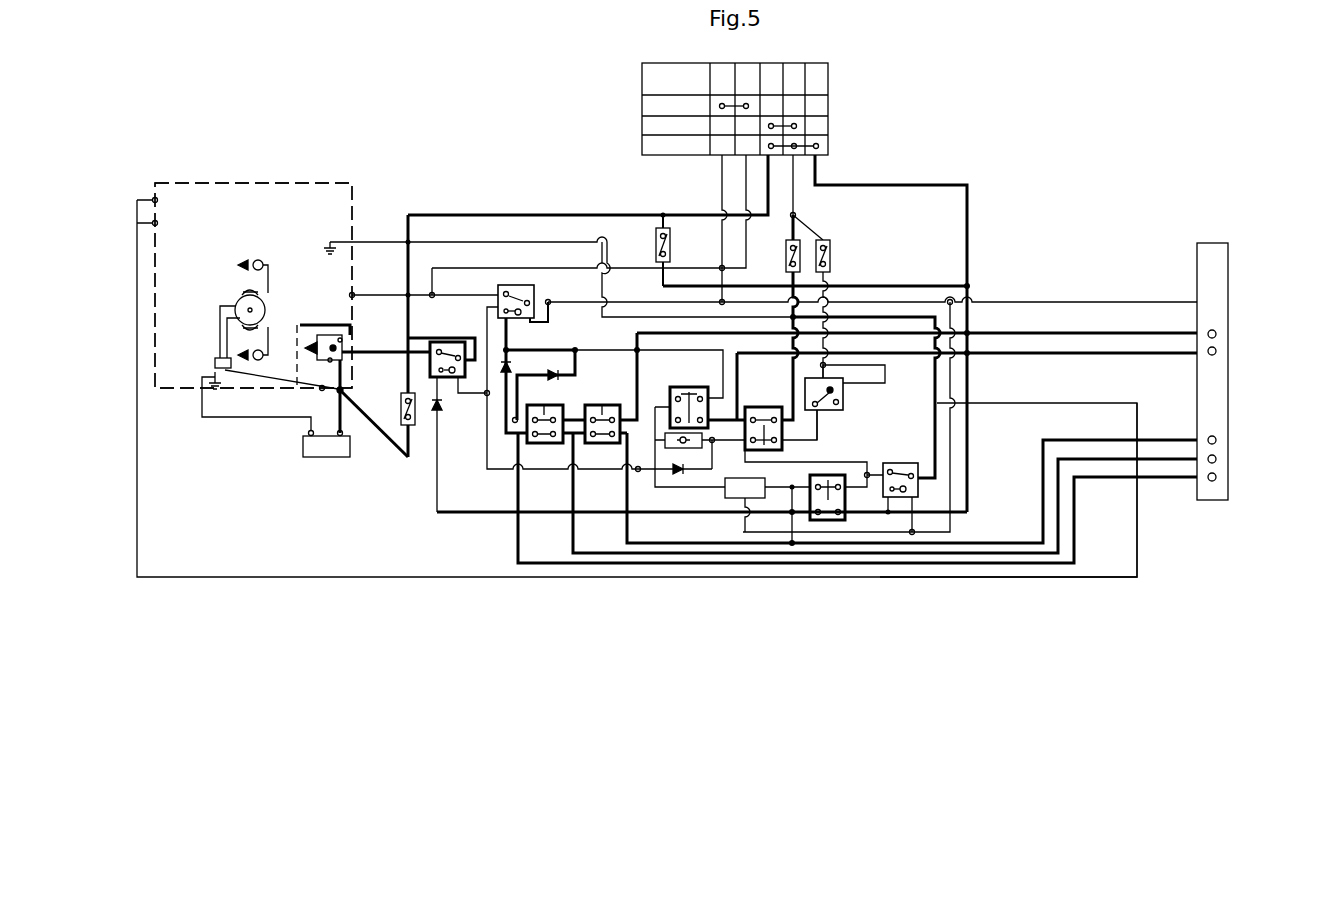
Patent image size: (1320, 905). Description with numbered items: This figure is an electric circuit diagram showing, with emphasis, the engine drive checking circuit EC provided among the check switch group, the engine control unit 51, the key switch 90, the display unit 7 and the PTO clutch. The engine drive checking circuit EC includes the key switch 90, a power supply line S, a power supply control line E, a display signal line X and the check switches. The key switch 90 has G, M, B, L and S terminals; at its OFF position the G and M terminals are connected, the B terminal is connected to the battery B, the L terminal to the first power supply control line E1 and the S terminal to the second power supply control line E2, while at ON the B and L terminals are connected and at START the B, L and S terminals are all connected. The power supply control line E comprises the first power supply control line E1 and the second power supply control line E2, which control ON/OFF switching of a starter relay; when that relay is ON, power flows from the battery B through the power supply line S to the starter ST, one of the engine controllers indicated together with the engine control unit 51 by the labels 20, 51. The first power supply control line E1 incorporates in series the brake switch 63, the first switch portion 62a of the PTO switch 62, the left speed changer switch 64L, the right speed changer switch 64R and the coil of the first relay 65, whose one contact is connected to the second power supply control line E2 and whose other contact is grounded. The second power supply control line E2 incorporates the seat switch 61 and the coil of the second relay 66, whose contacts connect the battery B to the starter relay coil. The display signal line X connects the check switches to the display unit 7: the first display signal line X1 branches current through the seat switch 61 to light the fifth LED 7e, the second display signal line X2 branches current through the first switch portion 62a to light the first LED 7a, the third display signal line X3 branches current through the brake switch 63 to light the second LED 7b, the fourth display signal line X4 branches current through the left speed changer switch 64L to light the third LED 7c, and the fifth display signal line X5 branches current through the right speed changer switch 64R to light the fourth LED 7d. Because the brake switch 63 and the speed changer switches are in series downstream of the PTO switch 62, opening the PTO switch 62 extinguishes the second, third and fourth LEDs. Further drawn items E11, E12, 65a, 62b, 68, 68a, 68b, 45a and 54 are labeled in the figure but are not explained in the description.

The key switch 90 is at (830, 102).
The power supply control line E is at (845, 160).
The first power supply control line E1 is at (797, 195).
The second power supply control line E2 is at (880, 185).
The fuse E11 is at (830, 238).
The fuse E12 is at (784, 238).
The engine drive checking circuit EC is at (897, 282).
The display unit 7 is at (1212, 243).
The first LED 7a is at (1217, 357).
The second LED 7b is at (1217, 331).
The third LED 7c is at (1217, 459).
The fourth LED 7d is at (1217, 482).
The fifth LED 7e is at (1217, 438).
The display signal line X is at (1180, 492).
The first display signal line X1 is at (1040, 466).
The second display signal line X2 is at (1155, 356).
The third display signal line X3 is at (1082, 334).
The fourth display signal line X4 is at (1055, 502).
The fifth display signal line X5 is at (1076, 506).
The harness 54 is at (908, 580).
The starter unit 20 is at (303, 183).
The engine control unit 51 is at (253, 285).
The starter ST is at (332, 330).
The power supply line S is at (390, 437).
The battery B is at (328, 458).
The second relay 66 is at (447, 342).
The first relay 65 is at (537, 297).
The relay contact 65a is at (518, 297).
The right speed changer switch 64R is at (545, 405).
The left speed changer switch 64L is at (605, 405).
The brake switch 63 is at (689, 387).
The PTO switch 62 is at (752, 407).
The first switch portion of the PTO switch 62a is at (766, 407).
The relay contact 62b is at (785, 448).
The switch 68 is at (845, 406).
The switch contact 68a is at (828, 412).
The switch contact 68b is at (845, 389).
The solenoid 45a is at (689, 449).
The seat switch 61 is at (828, 522).